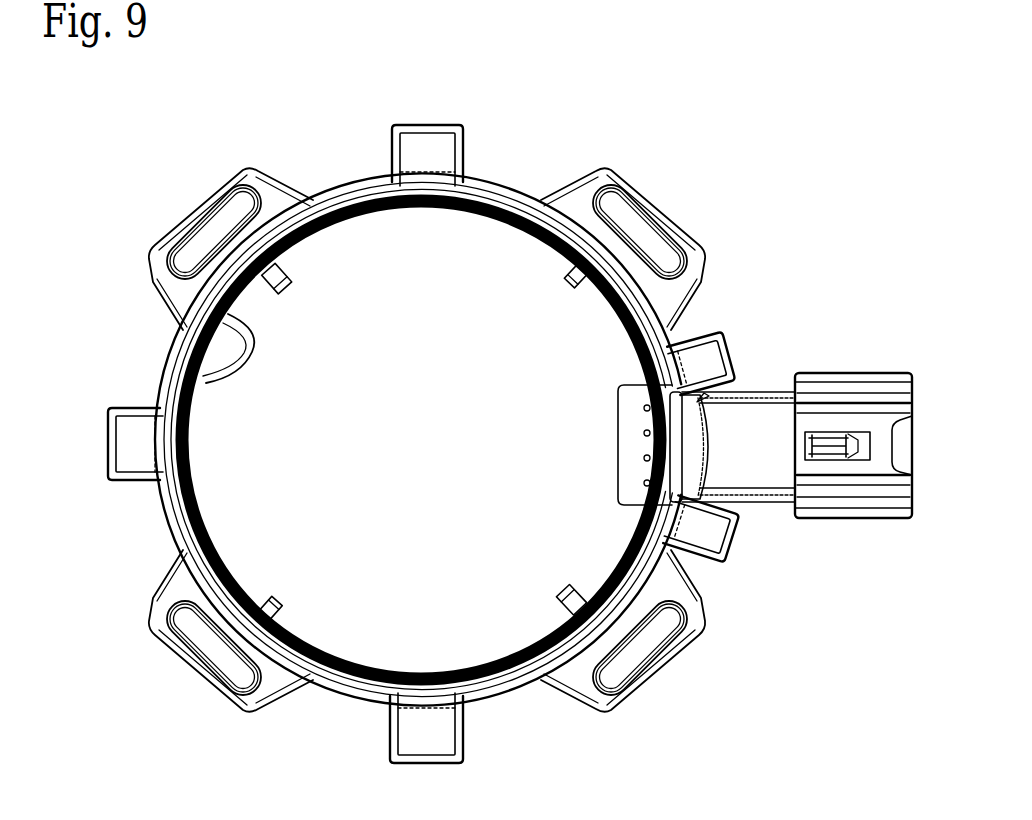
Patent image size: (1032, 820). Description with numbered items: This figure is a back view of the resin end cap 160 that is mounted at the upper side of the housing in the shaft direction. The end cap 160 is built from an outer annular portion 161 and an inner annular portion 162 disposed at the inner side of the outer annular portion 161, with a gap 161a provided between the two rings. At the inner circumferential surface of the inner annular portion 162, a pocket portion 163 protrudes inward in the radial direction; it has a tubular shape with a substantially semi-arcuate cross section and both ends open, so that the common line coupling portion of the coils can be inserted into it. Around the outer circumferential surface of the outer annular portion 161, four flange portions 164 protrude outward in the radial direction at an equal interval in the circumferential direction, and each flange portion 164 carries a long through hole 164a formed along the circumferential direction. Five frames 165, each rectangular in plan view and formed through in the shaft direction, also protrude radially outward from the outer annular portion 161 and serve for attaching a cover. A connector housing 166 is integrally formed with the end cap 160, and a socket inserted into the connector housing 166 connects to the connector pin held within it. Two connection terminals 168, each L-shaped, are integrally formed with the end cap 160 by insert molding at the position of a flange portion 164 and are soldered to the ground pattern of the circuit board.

The end cap 160 is at (479, 443).
The outer annular portion 161 is at (350, 181).
The gap 161a is at (346, 210).
The inner annular portion 162 is at (203, 479).
The pocket portion 163 is at (255, 354).
The flange portion 164 is at (204, 213).
The long through hole 164a is at (210, 232).
The frame 165 is at (441, 126).
The connector housing 166 is at (872, 372).
The connection terminal 168 is at (292, 297).